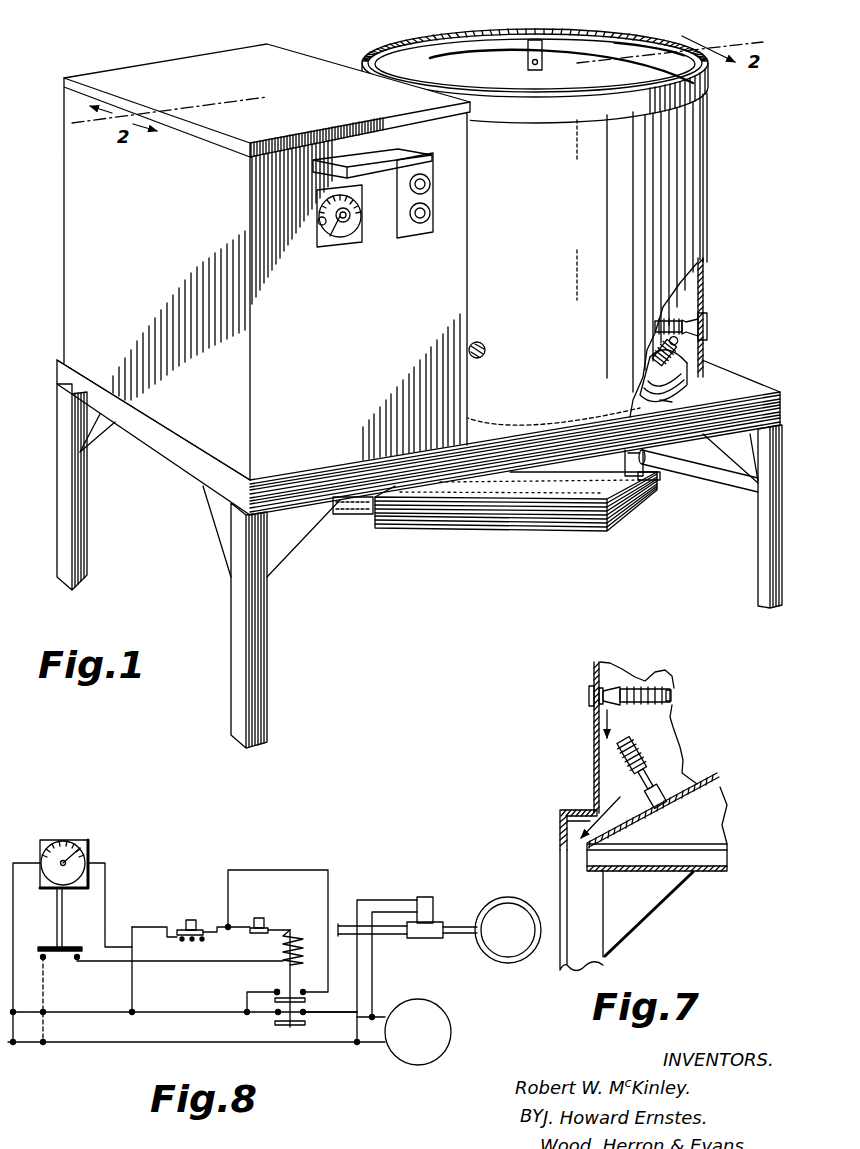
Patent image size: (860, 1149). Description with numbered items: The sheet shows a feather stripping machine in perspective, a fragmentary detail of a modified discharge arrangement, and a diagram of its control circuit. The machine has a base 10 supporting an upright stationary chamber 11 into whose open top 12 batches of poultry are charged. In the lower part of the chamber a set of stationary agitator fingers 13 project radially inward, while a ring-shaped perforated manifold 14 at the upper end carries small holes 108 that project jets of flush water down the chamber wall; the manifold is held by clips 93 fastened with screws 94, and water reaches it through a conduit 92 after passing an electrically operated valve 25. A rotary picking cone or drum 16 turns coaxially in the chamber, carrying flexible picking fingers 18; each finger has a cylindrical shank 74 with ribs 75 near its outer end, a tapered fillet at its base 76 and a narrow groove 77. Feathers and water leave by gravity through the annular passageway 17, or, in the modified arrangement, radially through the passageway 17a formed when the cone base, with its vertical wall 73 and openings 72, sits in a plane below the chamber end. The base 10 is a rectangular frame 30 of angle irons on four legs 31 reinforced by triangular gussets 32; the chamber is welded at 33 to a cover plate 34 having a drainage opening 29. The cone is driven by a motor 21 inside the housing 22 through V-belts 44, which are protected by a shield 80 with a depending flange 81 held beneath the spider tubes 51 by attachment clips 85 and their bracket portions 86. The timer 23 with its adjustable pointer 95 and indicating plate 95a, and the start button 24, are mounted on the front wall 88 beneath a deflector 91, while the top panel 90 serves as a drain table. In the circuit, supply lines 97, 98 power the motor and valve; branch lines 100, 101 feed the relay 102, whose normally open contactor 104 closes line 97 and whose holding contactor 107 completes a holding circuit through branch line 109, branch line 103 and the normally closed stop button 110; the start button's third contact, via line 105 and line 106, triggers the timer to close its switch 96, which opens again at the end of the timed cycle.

In FIG. 1, the base 10 is at (182, 453).
In FIG. 1, the stationary chamber 11 is at (712, 166).
In FIG. 1, the open top 12 is at (565, 58).
In FIG. 1, the stationary agitator fingers 13 is at (490, 349).
In FIG. 7, the stationary agitator fingers 13 is at (587, 694).
In FIG. 1, the manifold 14 is at (427, 52).
In FIG. 8, the manifold 14 is at (504, 896).
In FIG. 1, the rotary picking cone 16 is at (652, 376).
In FIG. 7, the rotary picking cone 16 is at (702, 775).
In FIG. 1, the annular passageway 17 is at (688, 384).
In FIG. 7, the annular discharge passageway 17a is at (587, 858).
In FIG. 1, the picking fingers 18 is at (655, 340).
In FIG. 7, the picking fingers 18 is at (640, 738).
In FIG. 8, the motor 21 is at (440, 1028).
In FIG. 1, the housing 22 is at (84, 225).
In FIG. 1, the adjustable timer 23 is at (328, 247).
In FIG. 8, the adjustable timer 23 is at (92, 845).
In FIG. 1, the start button 24 is at (430, 183).
In FIG. 8, the start button 24 is at (192, 918).
In FIG. 8, the electrically operated valve 25 is at (428, 897).
In FIG. 1, the circular opening 29 is at (672, 396).
In FIG. 1, the rectangular frame 30 is at (200, 463).
In FIG. 1, the legs 31 is at (60, 524).
In FIG. 7, the legs 31 is at (604, 958).
In FIG. 1, the triangular gussets 32 is at (93, 433).
In FIG. 7, the triangular gussets 32 is at (652, 902).
In FIG. 1, the weld 33 is at (512, 425).
In FIG. 7, the weld 33 is at (593, 805).
In FIG. 1, the cover plate 34 is at (757, 388).
In FIG. 7, the cover plate 34 is at (562, 812).
In FIG. 1, the V-belts 44 is at (350, 516).
In FIG. 1, the tubes 51 is at (695, 481).
In FIG. 7, the openings 72 is at (685, 856).
In FIG. 7, the vertical wall 73 is at (622, 852).
In FIG. 7, the cylindrical shank 74 is at (655, 688).
In FIG. 7, the ribs 75 is at (672, 693).
In FIG. 1, the base 76 is at (480, 342).
In FIG. 7, the base 76 is at (592, 686).
In FIG. 7, the narrow groove 77 is at (597, 701).
In FIG. 1, the shield 80 is at (490, 512).
In FIG. 1, the depending flange 81 is at (580, 532).
In FIG. 1, the attachment clips 85 is at (626, 458).
In FIG. 1, the bracket portions 86 is at (646, 482).
In FIG. 1, the front wall 88 is at (287, 386).
In FIG. 1, the top panel 90 is at (267, 93).
In FIG. 1, the deflector 91 is at (370, 161).
In FIG. 8, the conduit 92 is at (398, 936).
In FIG. 1, the clips 93 is at (533, 40).
In FIG. 1, the screws 94 is at (533, 66).
In FIG. 1, the adjustable pointer 95 is at (348, 220).
In FIG. 8, the adjustable pointer 95 is at (76, 845).
In FIG. 1, the indicating plate 95a is at (344, 236).
In FIG. 8, the indicating plate 95a is at (53, 845).
In FIG. 8, the timer switch 96 is at (72, 946).
In FIG. 8, the supply line 97 is at (61, 1011).
In FIG. 8, the supply line 98 is at (83, 1044).
In FIG. 8, the branch line 100 is at (47, 972).
In FIG. 8, the branch line 101 is at (134, 990).
In FIG. 8, the relay 102 is at (270, 973).
In FIG. 8, the branch line 103 is at (285, 930).
In FIG. 8, the normally open contactor 104 is at (297, 1028).
In FIG. 8, the line 105 is at (108, 890).
In FIG. 8, the line 106 is at (22, 895).
In FIG. 8, the holding contactor 107 is at (306, 1001).
In FIG. 1, the small holes 108 is at (640, 60).
In FIG. 8, the branch line 109 is at (332, 882).
In FIG. 1, the stop button 110 is at (430, 216).
In FIG. 8, the stop button 110 is at (258, 917).